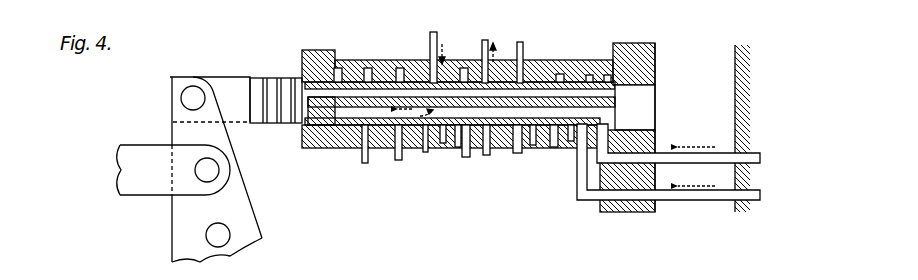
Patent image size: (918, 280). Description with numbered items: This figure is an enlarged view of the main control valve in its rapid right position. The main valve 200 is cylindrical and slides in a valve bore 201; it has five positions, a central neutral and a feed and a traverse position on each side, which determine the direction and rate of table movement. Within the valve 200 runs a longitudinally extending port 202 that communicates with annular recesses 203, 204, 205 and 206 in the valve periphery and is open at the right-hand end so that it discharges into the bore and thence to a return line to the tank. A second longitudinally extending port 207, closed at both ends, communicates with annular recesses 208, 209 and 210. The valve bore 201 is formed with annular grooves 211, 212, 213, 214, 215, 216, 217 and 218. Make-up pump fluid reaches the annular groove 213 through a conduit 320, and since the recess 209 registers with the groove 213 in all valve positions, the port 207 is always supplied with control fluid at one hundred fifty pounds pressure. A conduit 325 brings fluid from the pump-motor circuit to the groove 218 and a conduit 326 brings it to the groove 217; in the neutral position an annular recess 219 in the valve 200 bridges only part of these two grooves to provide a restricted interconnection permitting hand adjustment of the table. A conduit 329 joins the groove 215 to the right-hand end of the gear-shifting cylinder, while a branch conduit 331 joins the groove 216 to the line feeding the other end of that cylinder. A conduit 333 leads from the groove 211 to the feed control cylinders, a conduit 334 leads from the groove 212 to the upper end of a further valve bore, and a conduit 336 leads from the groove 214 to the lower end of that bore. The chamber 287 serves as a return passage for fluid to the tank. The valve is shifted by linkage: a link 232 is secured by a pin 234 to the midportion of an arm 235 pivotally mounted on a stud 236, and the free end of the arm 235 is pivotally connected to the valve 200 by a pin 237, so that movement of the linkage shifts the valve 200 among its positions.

The main valve 200 is at (230, 84).
The valve bore 201 is at (656, 126).
The longitudinally extending port 202 is at (606, 98).
The annular recess 203 is at (332, 143).
The annular recess 204 is at (383, 145).
The annular recess 205 is at (458, 163).
The annular recess 206 is at (566, 140).
The longitudinally extending port 207 is at (592, 116).
The annular recess 208 is at (340, 80).
The annular recess 209 is at (415, 142).
The annular recess 210 is at (528, 137).
The annular groove 211 is at (366, 80).
The annular groove 212 is at (398, 80).
The annular groove 213 is at (440, 140).
The annular groove 214 is at (463, 80).
The annular groove 215 is at (517, 137).
The annular groove 216 is at (551, 137).
The annular groove 217 is at (590, 75).
The annular groove 218 is at (610, 75).
The annular recess 219 is at (560, 82).
The link 232 is at (153, 152).
The pin 234 is at (214, 169).
The arm 235 is at (236, 197).
The stud 236 is at (206, 236).
The pin 237 is at (190, 98).
The chamber 287 is at (738, 87).
The conduit 320 is at (438, 55).
The conduit 325 is at (749, 154).
The conduit 326 is at (749, 196).
The conduit 329 is at (485, 42).
The branch conduit 331 is at (525, 45).
The conduit 333 is at (356, 158).
The conduit 334 is at (410, 163).
The conduit 336 is at (468, 157).